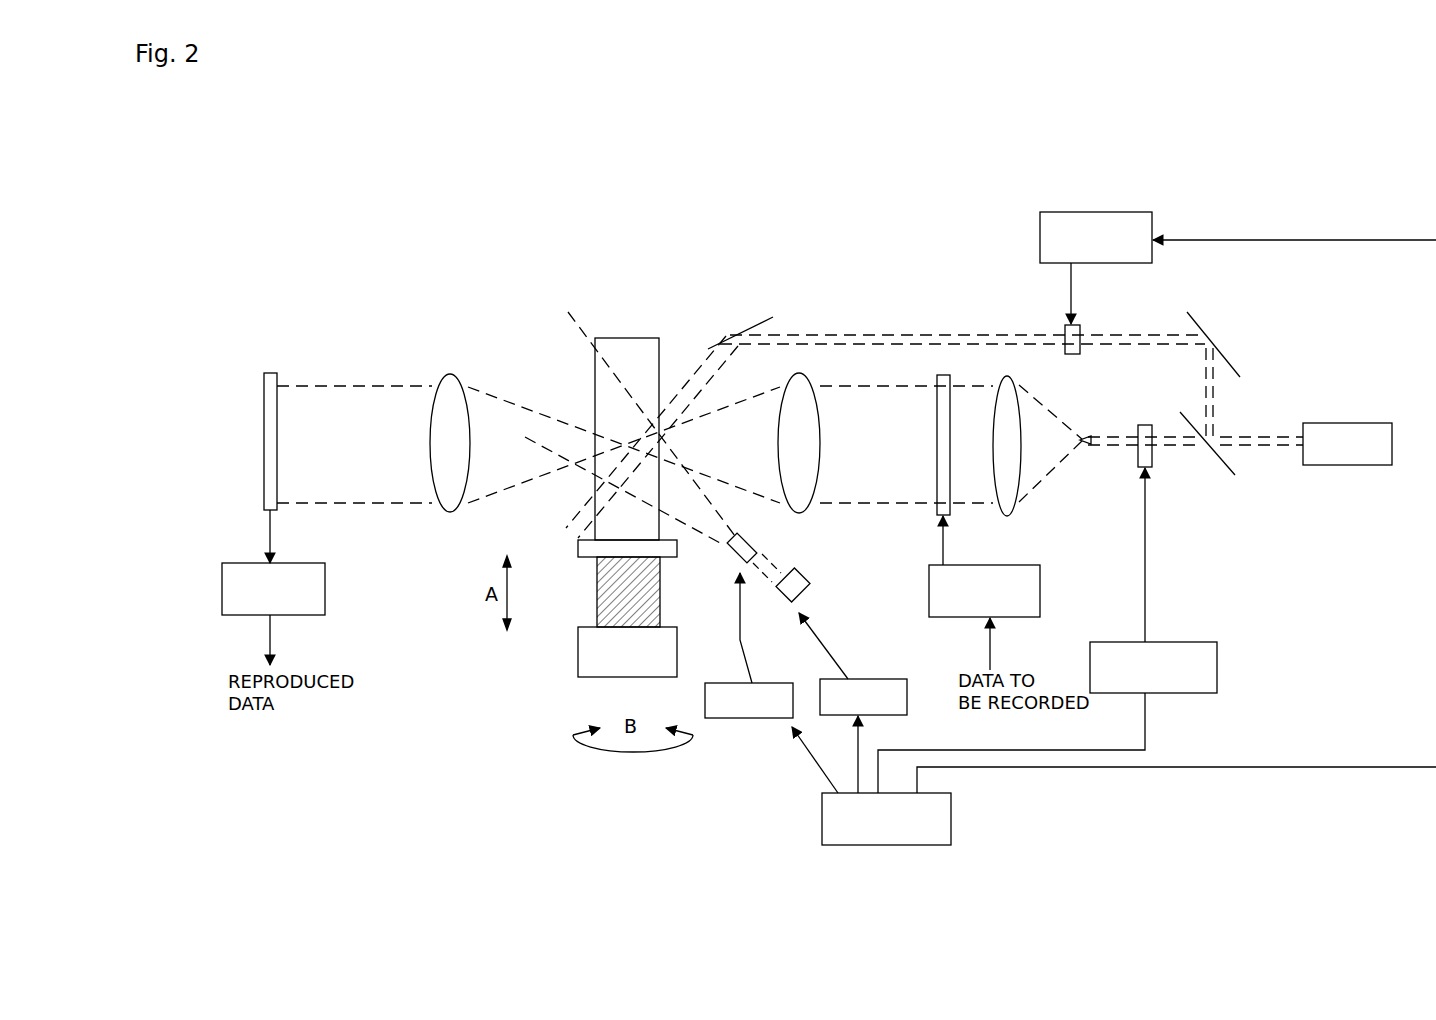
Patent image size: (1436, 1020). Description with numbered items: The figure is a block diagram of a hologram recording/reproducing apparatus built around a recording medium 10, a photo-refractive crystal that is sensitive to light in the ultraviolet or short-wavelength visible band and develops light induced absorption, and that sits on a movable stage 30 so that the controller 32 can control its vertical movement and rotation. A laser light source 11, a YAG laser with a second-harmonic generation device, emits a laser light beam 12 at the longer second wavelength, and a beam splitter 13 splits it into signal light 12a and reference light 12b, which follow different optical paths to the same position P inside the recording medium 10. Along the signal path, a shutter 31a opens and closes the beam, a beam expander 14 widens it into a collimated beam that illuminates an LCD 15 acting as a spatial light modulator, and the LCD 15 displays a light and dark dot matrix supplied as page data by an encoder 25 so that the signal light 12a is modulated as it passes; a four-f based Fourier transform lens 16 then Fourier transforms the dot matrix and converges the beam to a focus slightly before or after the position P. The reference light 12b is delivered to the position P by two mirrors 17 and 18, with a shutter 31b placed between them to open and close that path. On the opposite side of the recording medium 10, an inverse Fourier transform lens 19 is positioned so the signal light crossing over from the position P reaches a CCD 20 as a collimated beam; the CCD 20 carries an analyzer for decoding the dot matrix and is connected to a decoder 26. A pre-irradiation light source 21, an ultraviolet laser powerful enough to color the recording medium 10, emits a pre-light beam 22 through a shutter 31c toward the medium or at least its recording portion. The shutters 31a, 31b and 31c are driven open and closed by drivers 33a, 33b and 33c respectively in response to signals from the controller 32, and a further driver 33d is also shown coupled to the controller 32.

The recording medium 10 is at (632, 338).
The laser light source 11 is at (1347, 466).
The laser light beam 12 is at (1282, 448).
The signal light 12a is at (1178, 448).
The reference light 12b is at (904, 333).
The beam splitter 13 is at (1216, 476).
The beam expander 14 is at (1045, 452).
The LCD 15 is at (940, 375).
The 4-f based Fourier transform lens 16 is at (790, 385).
The mirror 17 is at (1225, 348).
The mirror 18 is at (773, 317).
The inverse Fourier transform lens 19 is at (450, 375).
The CCD 20 is at (270, 373).
The pre-irradiation light source 21 is at (810, 583).
The pre-light beam 22 is at (722, 546).
The encoder 25 is at (1040, 585).
The decoder 26 is at (325, 588).
The movable stage 30 is at (578, 656).
The shutter 31a is at (1145, 425).
The shutter 31b is at (1080, 330).
The shutter 31c is at (758, 535).
The controller 32 is at (877, 845).
The driver 33a is at (1210, 665).
The driver 33b is at (1040, 227).
The driver 33c is at (748, 718).
The driver 33d is at (880, 679).
The position P is at (597, 432).